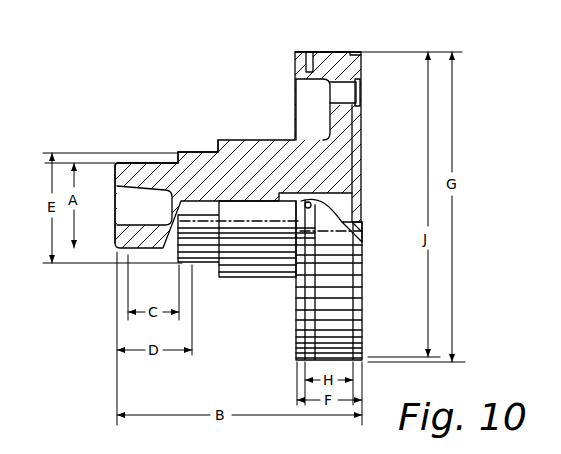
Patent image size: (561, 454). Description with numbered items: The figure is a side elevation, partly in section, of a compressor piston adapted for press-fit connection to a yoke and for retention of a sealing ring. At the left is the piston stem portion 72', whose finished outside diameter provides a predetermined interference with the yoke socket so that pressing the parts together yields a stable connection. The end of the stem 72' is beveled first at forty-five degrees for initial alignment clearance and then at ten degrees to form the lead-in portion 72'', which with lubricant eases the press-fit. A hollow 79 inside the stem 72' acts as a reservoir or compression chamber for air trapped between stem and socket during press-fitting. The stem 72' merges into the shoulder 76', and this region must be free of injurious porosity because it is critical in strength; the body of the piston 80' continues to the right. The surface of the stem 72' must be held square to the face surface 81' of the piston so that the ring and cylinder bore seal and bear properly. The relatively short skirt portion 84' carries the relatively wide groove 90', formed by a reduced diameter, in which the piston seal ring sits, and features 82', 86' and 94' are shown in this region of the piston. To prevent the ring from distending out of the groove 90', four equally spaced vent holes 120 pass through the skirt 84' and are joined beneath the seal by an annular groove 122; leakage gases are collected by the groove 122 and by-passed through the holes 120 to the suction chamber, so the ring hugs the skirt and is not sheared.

The lead-in portion 72'' is at (120, 185).
The piston stem portion 72' is at (148, 137).
The shoulder 76' is at (194, 128).
The hub body 80' is at (238, 150).
The hollow 79 is at (148, 200).
The annular groove 122 is at (309, 50).
The groove 90' is at (330, 29).
The rim edge 86' is at (323, 44).
The vent holes 120 is at (300, 86).
The skirt portion 84' is at (352, 104).
The pin 94' is at (366, 107).
The inner wall 82' is at (370, 149).
The face surface 81' is at (374, 207).